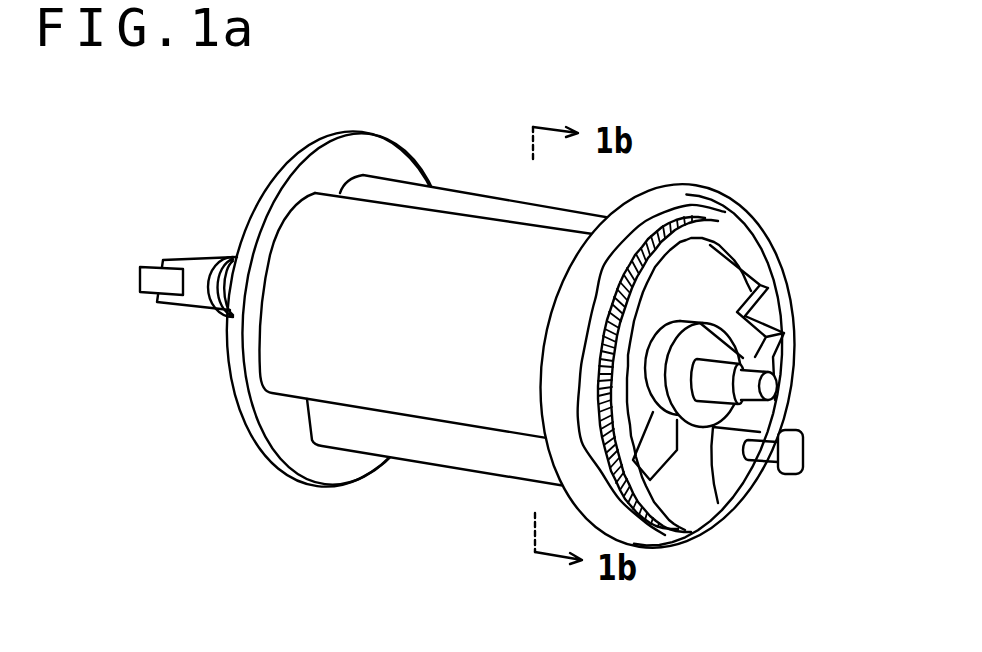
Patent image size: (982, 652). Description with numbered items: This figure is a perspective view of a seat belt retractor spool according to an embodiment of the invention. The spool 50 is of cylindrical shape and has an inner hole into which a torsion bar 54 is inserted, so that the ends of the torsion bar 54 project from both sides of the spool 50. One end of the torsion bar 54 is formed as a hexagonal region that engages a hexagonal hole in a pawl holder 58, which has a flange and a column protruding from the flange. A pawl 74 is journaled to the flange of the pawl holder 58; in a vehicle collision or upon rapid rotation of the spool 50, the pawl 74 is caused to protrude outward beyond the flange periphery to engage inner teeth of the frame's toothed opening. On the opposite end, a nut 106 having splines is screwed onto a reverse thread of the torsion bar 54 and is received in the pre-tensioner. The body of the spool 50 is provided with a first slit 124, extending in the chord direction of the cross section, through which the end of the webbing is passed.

The spool 50 is at (435, 245).
The first slit 124 is at (498, 210).
The torsion bar 54 is at (170, 302).
The nut 106 is at (212, 317).
The pawl holder 58 is at (680, 497).
The pawl 74 is at (742, 463).